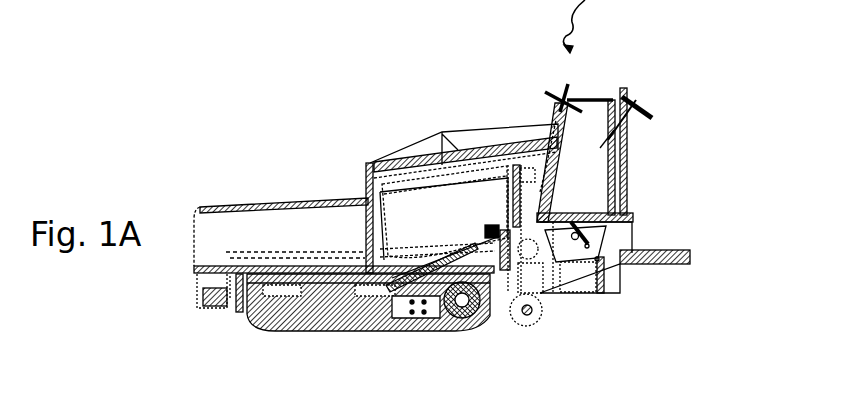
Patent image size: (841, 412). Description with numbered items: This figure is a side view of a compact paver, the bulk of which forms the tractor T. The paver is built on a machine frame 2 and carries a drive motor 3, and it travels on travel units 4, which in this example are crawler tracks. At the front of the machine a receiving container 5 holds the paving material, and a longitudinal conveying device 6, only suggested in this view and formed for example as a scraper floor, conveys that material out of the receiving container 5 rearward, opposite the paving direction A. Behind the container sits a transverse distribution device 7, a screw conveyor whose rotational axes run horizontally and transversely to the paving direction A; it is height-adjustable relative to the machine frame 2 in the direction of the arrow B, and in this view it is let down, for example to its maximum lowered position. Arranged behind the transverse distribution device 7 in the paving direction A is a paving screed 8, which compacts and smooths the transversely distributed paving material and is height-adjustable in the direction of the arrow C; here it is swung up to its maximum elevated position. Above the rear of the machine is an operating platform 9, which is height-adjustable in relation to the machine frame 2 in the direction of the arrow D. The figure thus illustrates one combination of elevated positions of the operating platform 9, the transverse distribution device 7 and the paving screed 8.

The machine frame 2 is at (368, 185).
The drive motor 3 is at (440, 192).
The travel units 4 is at (433, 332).
The receiving container 5 is at (238, 232).
The longitudinal conveying device 6 is at (243, 258).
The transverse distribution device 7 is at (530, 278).
The paving screed 8 is at (555, 250).
The operating platform 9 is at (632, 104).
The tractor T is at (360, 243).
The paving direction A is at (112, 179).
The direction of height adjustment of the transverse distribution device B is at (523, 338).
The direction of height adjustment of the paving screed C is at (613, 306).
The direction of height adjustment of the operating platform D is at (638, 139).